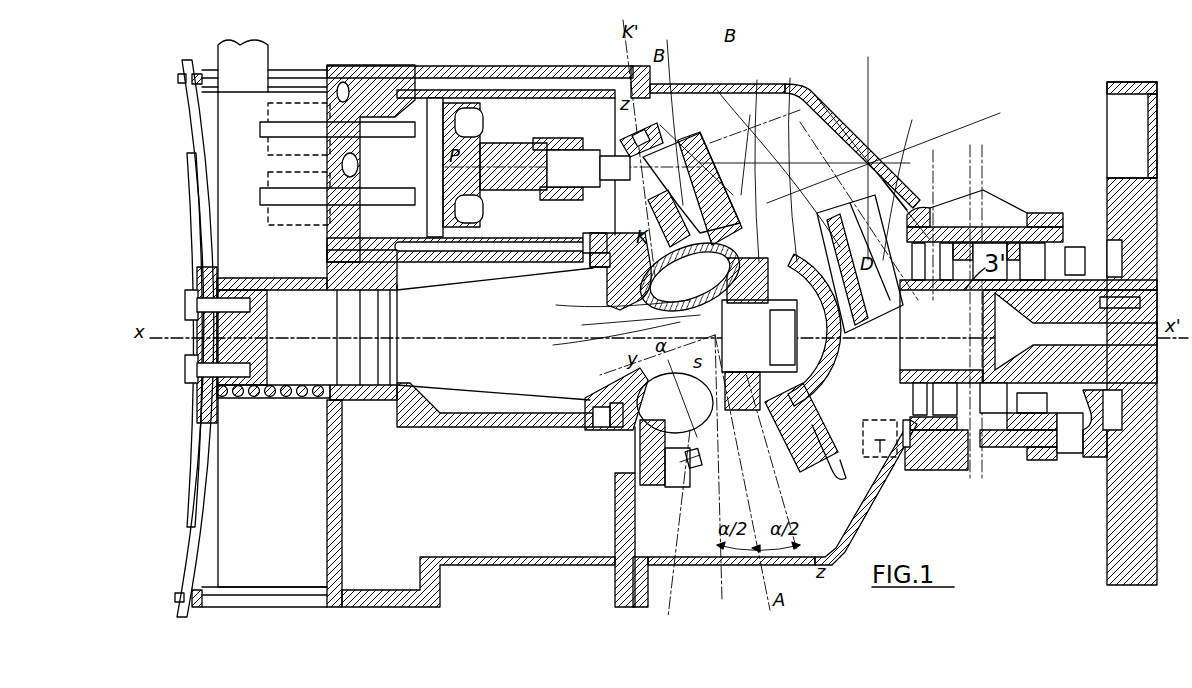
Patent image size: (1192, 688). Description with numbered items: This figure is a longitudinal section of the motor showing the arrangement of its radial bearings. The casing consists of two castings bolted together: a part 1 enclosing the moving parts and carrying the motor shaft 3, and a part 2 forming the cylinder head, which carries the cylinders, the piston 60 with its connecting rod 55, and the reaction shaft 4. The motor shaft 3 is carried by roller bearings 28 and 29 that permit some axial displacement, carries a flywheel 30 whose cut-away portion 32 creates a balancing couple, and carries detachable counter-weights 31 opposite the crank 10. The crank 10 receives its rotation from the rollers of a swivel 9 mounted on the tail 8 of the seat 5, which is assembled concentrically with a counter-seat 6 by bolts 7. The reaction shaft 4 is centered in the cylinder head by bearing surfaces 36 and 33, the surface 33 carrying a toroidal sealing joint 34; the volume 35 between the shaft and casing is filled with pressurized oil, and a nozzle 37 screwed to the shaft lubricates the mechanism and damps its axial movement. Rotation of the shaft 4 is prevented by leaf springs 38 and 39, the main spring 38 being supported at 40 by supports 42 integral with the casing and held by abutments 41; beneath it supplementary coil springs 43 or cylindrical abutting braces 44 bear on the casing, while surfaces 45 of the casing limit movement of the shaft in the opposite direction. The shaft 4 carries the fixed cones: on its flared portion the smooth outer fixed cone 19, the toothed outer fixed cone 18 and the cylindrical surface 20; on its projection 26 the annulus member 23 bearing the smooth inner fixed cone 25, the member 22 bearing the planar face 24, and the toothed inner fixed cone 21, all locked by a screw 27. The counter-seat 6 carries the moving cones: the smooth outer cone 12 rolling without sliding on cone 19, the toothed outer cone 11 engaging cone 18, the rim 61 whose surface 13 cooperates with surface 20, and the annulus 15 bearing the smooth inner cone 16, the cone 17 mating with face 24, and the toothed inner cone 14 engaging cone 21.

The casing part 1 is at (671, 109).
The cylinder head casing part 2 is at (456, 70).
The exterior motor shaft 3 is at (1065, 247).
The reaction shaft 4 is at (483, 323).
The seat 5 is at (838, 462).
The counter-seat 6 is at (717, 420).
The bolts 7 is at (755, 142).
The tail of the seat 8 is at (910, 207).
The swivel 9 is at (904, 178).
The crank 10 is at (868, 163).
The toothed outer moving cone 11 is at (853, 543).
The smooth outer moving cone 12 is at (757, 455).
The exterior moving surface 13 is at (773, 432).
The toothed inner moving cone 14 is at (608, 310).
The annulus 15 is at (625, 329).
The smooth inner moving cone 16 is at (713, 333).
The cone 17 is at (603, 344).
The toothed outer fixed cone 18 is at (680, 462).
The smooth outer fixed cone 19 is at (695, 470).
The radial outer fixed cylindrical surface 20 is at (693, 478).
The toothed inner fixed cone 21 is at (759, 157).
The member 22 is at (794, 156).
The annulus member 23 is at (871, 155).
The planar face 24 is at (762, 58).
The smooth inner fixed cone 25 is at (716, 155).
The projection of the shaft 26 is at (811, 332).
The screw 27 is at (846, 263).
The roller bearing 28 is at (957, 445).
The roller bearing 29 is at (1018, 440).
The flywheel 30 is at (1148, 222).
The counter-weights 31 is at (878, 455).
The cut-away portion 32 is at (1135, 148).
The bearing surface 33 is at (350, 402).
The toroidal sealing joint 34 is at (373, 378).
The volume 35 is at (432, 408).
The bearing surface 36 is at (618, 440).
The nozzle 37 is at (597, 425).
The main leaf spring 38 is at (192, 137).
The leaf spring 39 is at (192, 198).
The support point 40 is at (194, 72).
The abutments 41 is at (178, 84).
The supports 42 is at (288, 80).
The supplementary coil springs 43 is at (228, 395).
The cylindrical abutting braces 44 is at (200, 293).
The surfaces of the casing 45 is at (622, 268).
The connecting rod 55 is at (603, 150).
The piston 60 is at (508, 163).
The rim 61 is at (830, 480).